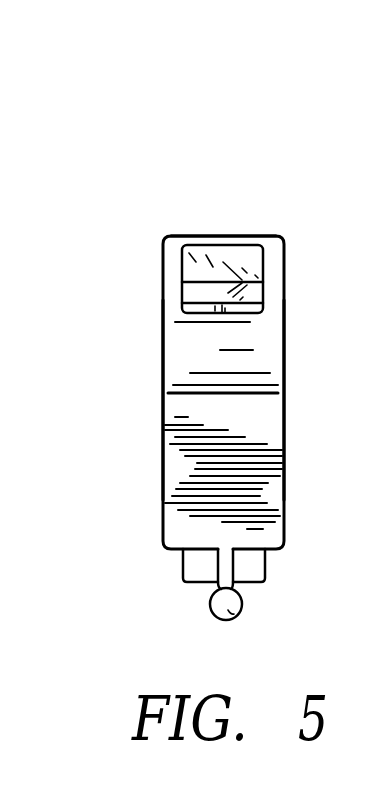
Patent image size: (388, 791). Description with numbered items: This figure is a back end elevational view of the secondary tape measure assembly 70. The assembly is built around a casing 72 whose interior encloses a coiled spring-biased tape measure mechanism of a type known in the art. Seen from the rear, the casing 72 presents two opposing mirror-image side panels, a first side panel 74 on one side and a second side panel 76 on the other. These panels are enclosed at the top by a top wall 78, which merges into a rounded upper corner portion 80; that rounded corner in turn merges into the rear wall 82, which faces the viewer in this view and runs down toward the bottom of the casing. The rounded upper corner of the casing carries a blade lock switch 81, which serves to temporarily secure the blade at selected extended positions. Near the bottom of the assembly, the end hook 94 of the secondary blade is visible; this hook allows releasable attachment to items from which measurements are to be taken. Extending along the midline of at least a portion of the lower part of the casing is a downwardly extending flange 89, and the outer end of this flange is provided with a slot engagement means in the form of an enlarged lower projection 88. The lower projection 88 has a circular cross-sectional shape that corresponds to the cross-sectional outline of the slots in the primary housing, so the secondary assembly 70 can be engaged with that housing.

The secondary tape measure assembly 70 is at (154, 194).
The casing 72 is at (258, 228).
The first side panel 74 is at (285, 370).
The second side panel 76 is at (172, 370).
The top wall 78 is at (208, 235).
The rounded upper corner portion 80 is at (172, 273).
The blade lock switch 81 is at (256, 274).
The rear wall 82 is at (172, 473).
The enlarged lower projection 88 is at (234, 620).
The downwardly extending flange 89 is at (208, 564).
The end hook 94 is at (256, 570).